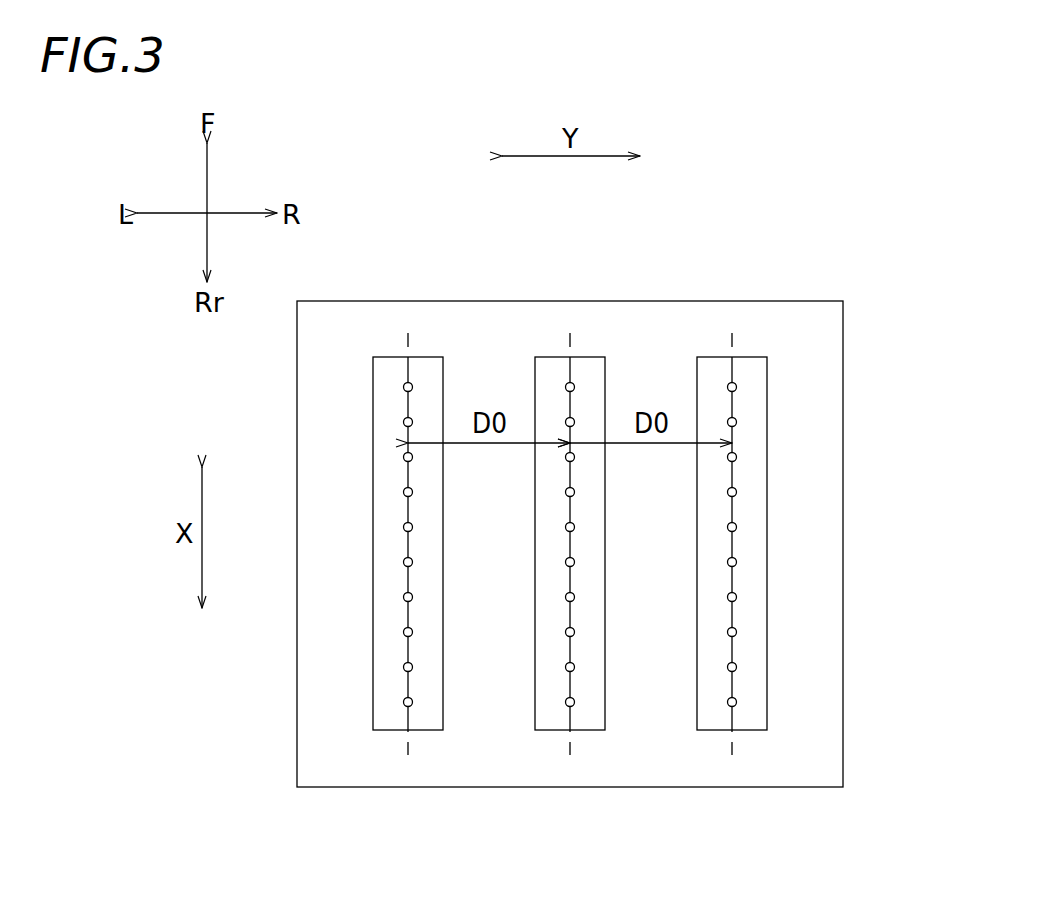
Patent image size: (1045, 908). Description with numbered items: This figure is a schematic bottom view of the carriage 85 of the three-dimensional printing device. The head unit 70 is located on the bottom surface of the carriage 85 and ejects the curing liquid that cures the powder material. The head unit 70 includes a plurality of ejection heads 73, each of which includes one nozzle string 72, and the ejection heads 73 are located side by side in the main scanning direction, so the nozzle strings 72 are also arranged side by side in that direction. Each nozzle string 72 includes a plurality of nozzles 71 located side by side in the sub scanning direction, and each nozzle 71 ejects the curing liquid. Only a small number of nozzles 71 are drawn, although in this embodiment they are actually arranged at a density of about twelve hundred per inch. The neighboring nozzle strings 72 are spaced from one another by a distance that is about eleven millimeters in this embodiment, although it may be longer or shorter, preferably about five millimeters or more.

The head unit 70 is at (792, 322).
The nozzle 71 is at (731, 382).
The nozzle string 72 is at (397, 378).
The ejection head 73 is at (716, 731).
The carriage 85 is at (843, 370).